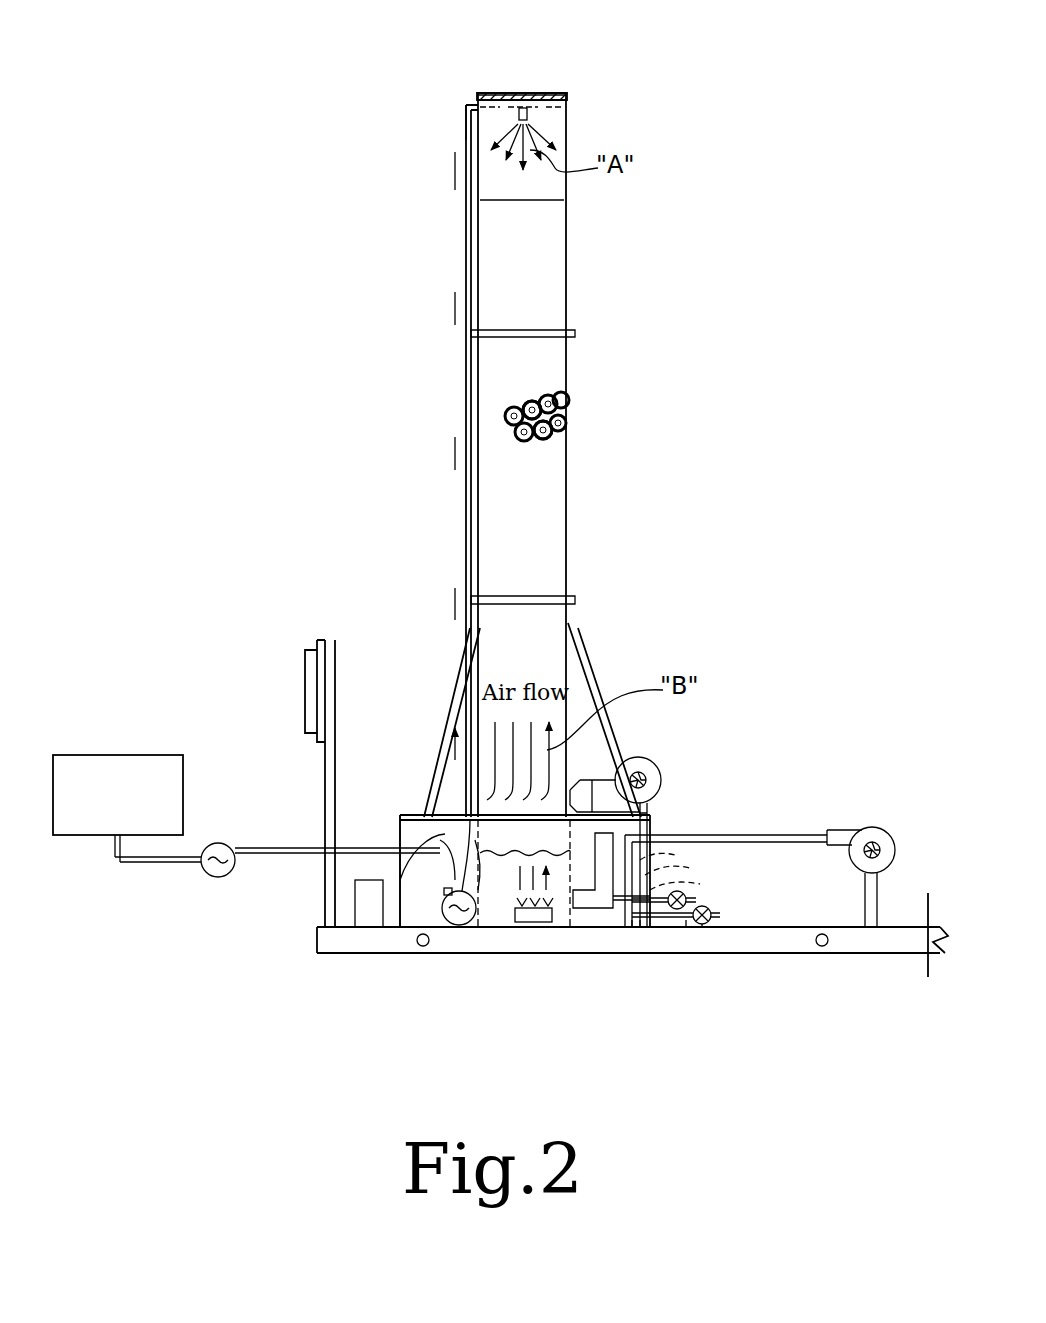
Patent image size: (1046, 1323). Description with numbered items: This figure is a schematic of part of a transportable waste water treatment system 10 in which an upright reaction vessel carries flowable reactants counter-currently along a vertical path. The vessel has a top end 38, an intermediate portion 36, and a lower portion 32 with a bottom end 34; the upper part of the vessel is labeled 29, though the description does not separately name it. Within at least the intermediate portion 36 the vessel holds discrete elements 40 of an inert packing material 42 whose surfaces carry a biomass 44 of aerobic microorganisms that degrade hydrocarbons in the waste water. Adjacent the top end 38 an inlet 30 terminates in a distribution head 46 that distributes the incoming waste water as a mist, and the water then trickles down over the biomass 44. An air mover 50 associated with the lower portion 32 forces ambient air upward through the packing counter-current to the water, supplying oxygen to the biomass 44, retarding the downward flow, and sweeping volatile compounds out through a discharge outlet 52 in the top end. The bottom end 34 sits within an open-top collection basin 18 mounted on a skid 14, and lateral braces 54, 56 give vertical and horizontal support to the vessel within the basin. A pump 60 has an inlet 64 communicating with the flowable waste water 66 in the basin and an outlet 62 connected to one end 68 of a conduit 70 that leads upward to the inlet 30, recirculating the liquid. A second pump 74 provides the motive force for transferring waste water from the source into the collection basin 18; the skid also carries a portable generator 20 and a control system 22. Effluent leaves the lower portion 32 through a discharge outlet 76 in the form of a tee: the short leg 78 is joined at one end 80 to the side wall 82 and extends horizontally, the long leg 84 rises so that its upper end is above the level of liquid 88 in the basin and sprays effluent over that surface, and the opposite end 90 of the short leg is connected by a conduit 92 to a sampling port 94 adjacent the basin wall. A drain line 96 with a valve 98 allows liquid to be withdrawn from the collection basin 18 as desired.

The transportable system 10 is at (732, 248).
The skid 14 is at (520, 953).
The collection basin 18 is at (418, 812).
The portable generator 20 is at (102, 755).
The control system 22 is at (358, 650).
The upper tower section 29 is at (522, 233).
The inlet 30 is at (478, 96).
The lower portion 32 is at (523, 623).
The bottom end 34 is at (478, 935).
The intermediate portion 36 is at (523, 412).
The top end 38 is at (568, 116).
The discrete elements 40 is at (565, 390).
The packing material 42 is at (566, 405).
The biomass 44 is at (565, 426).
The distribution head 46 is at (523, 108).
The air mover 50 is at (661, 760).
The discharge outlet 52 is at (548, 93).
The lateral brace 54 is at (595, 678).
The lateral brace 56 is at (447, 710).
The pump 60 is at (455, 923).
The outlet 62 is at (445, 832).
The inlet 64 is at (400, 880).
The flowable waste water 66 is at (445, 868).
The end of conduit 68 is at (466, 563).
The conduit 70 is at (465, 106).
The pump 74 is at (210, 876).
The discharge outlet 76 is at (720, 866).
The short leg 78 is at (665, 876).
The end of short leg 80 is at (577, 931).
The side wall 82 is at (556, 860).
The long leg 84 is at (652, 830).
The liquid 88 is at (655, 810).
The opposite end of short leg 90 is at (632, 927).
The conduit 92 is at (690, 894).
The sampling port 94 is at (716, 913).
The drain line 96 is at (687, 925).
The valve 98 is at (717, 922).